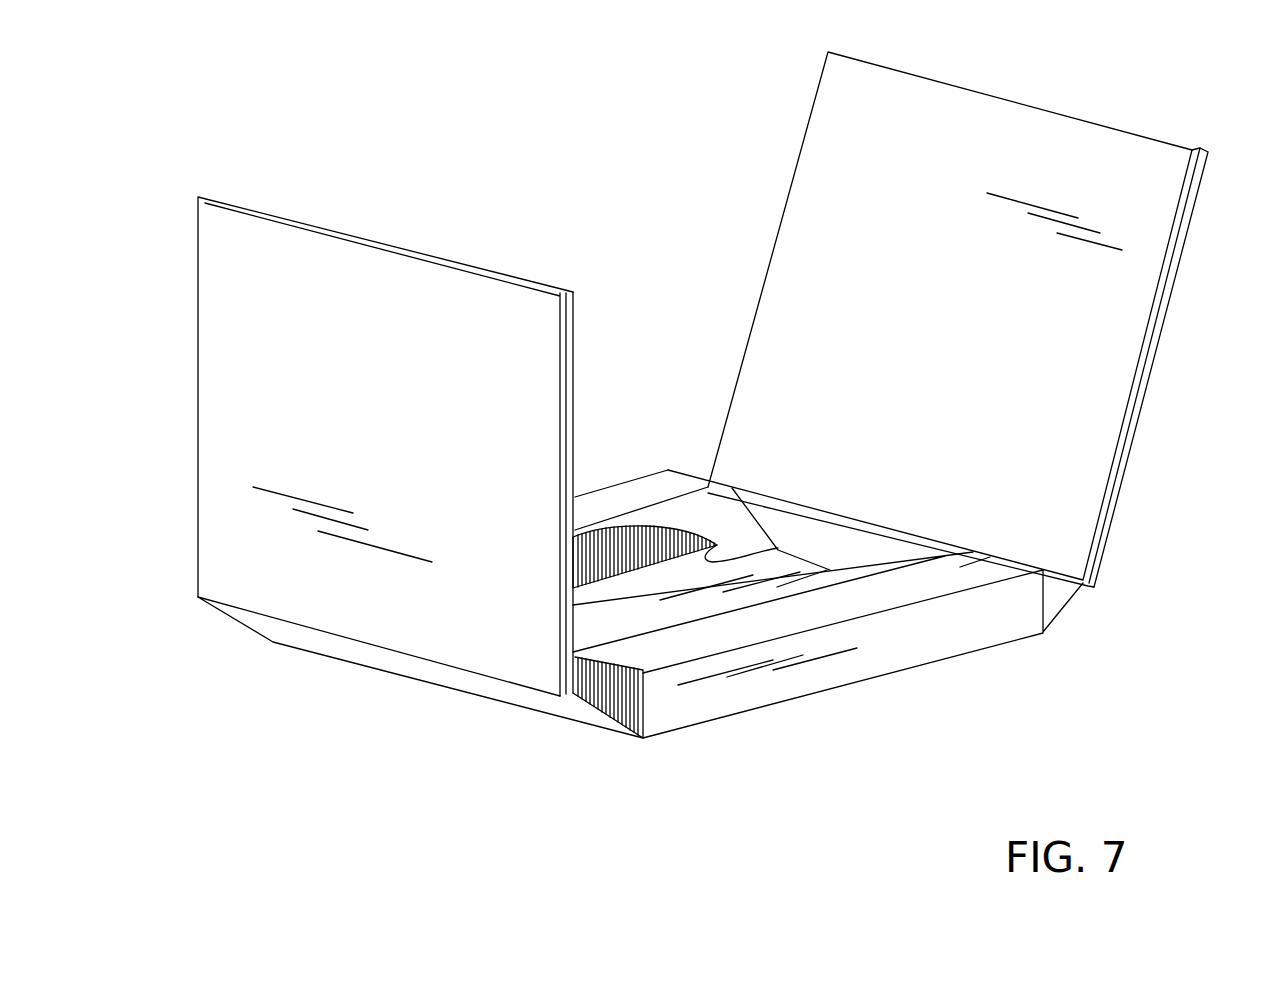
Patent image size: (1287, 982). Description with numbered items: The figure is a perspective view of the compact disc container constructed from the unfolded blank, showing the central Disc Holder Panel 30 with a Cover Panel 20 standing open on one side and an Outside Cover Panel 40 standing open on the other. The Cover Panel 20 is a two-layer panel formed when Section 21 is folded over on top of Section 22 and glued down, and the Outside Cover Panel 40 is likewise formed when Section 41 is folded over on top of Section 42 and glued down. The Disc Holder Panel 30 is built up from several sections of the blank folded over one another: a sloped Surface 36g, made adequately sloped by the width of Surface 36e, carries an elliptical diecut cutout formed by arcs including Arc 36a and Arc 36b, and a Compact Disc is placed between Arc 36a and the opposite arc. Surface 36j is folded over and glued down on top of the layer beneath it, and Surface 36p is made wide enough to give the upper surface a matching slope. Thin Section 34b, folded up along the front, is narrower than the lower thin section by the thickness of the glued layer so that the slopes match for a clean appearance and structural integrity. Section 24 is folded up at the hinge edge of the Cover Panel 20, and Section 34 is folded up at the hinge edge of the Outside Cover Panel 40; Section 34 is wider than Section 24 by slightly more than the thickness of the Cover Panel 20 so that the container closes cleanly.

The Cover Panel 20 is at (1181, 285).
The Section 21 is at (1143, 356).
The Section 22 is at (1157, 356).
The Section 24 is at (1073, 596).
The Disc Holder Panel 30 is at (808, 704).
The Section 34 is at (493, 683).
The thin Section 34b is at (922, 637).
The Arc 36a is at (641, 532).
The Arc 36b is at (760, 541).
The Surface 36e is at (705, 428).
The Surface 36g is at (724, 513).
The Surface 36j is at (828, 570).
The Surface 36p is at (1000, 553).
The Outside Cover Panel 40 is at (194, 263).
The Section 41 is at (573, 351).
The Section 42 is at (560, 351).